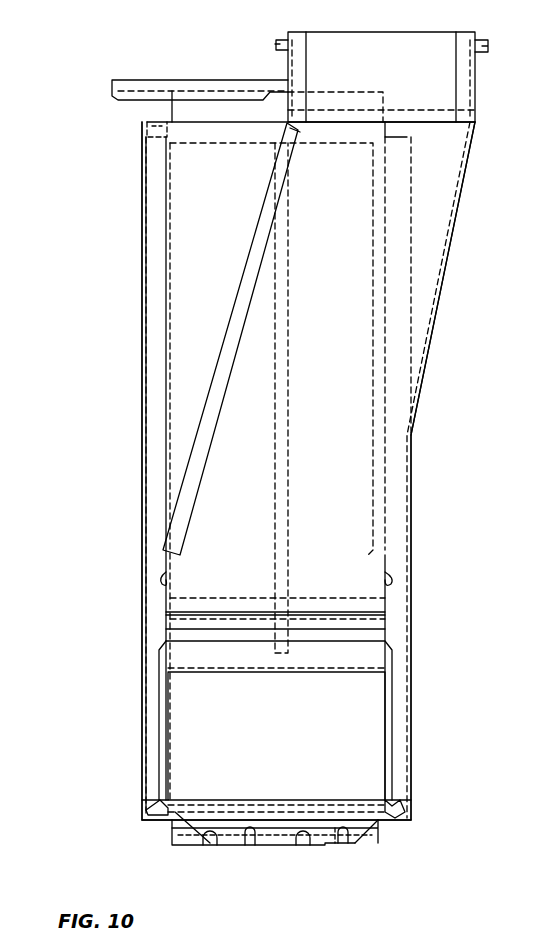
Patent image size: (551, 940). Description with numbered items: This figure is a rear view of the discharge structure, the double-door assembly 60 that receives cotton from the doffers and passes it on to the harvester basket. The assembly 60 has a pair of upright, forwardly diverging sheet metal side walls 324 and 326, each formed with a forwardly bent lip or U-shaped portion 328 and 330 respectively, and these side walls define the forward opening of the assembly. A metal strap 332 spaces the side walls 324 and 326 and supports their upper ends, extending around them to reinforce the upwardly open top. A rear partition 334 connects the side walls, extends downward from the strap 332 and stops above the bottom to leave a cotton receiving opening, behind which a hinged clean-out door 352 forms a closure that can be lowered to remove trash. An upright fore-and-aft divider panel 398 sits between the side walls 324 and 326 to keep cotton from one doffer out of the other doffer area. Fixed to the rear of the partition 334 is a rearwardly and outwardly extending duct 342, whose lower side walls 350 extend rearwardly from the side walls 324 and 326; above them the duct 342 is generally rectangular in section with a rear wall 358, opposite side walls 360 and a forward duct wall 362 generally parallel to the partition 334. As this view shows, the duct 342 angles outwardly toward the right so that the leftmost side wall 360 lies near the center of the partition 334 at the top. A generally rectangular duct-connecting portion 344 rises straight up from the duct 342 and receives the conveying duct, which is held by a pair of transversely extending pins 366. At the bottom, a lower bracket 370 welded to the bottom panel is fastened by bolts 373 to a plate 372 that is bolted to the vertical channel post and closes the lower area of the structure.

The double-door assembly 60 is at (118, 180).
The side wall 324 is at (160, 492).
The side wall 326 is at (392, 554).
The lip 328 is at (160, 575).
The lip 330 is at (413, 603).
The metal strap 332 is at (152, 126).
The rear partition 334 is at (269, 468).
The duct 342 is at (466, 197).
The duct-connecting portion 344 is at (477, 91).
The lower side walls 350 is at (172, 575).
The clean-out door 352 is at (275, 720).
The rear wall 358 is at (426, 233).
The side walls 360 is at (238, 294).
The forward duct wall 362 is at (433, 157).
The pins 366 is at (278, 42).
The lower bracket 370 is at (355, 842).
The plate 372 is at (262, 847).
The bolts 373 is at (198, 845).
The divider panel 398 is at (285, 412).